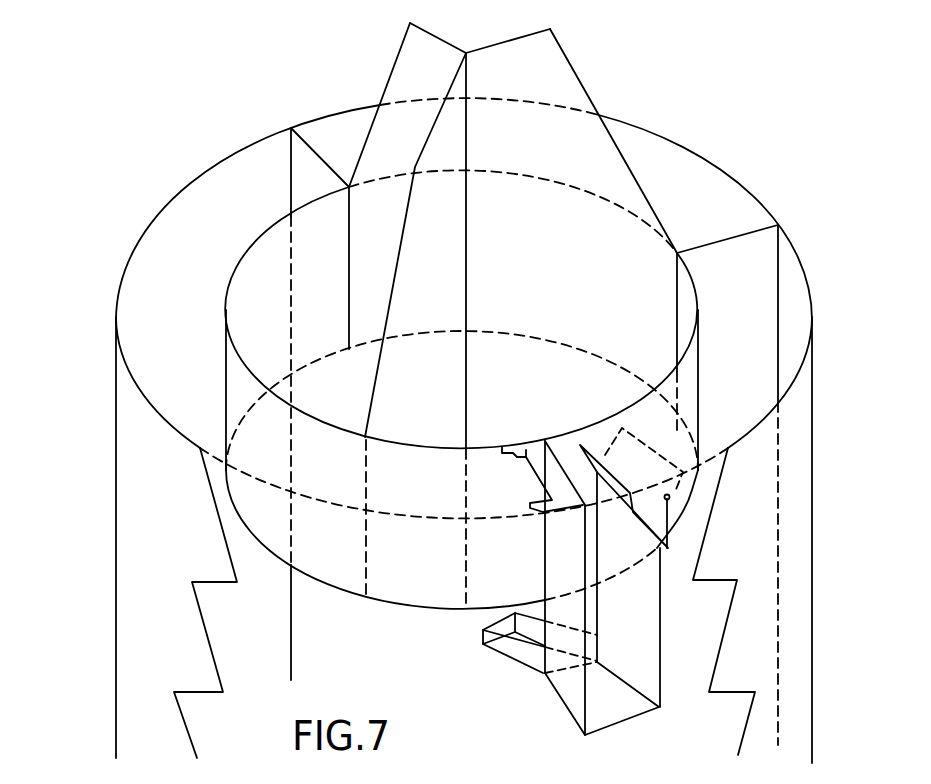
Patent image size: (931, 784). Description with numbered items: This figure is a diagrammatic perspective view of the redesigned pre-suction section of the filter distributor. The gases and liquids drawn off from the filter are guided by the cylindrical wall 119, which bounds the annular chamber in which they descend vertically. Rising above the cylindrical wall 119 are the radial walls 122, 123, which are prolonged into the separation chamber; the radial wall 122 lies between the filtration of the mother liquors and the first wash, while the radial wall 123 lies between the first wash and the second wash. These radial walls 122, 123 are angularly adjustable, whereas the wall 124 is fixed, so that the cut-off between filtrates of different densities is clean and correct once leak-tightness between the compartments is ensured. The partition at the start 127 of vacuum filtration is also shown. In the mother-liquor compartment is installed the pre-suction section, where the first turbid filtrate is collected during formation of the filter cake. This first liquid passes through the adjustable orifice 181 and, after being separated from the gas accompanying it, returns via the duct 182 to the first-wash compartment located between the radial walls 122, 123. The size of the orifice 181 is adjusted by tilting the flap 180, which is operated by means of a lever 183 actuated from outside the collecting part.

The cylindrical wall 119 is at (226, 367).
The radial wall 122 is at (586, 95).
The radial wall 123 is at (378, 106).
The wall 124 is at (381, 353).
The partition at start of vacuum filtration 127 is at (527, 447).
The flap 180 is at (651, 477).
The adjustable orifice 181 is at (565, 446).
The duct 182 is at (513, 652).
The lever 183 is at (669, 517).